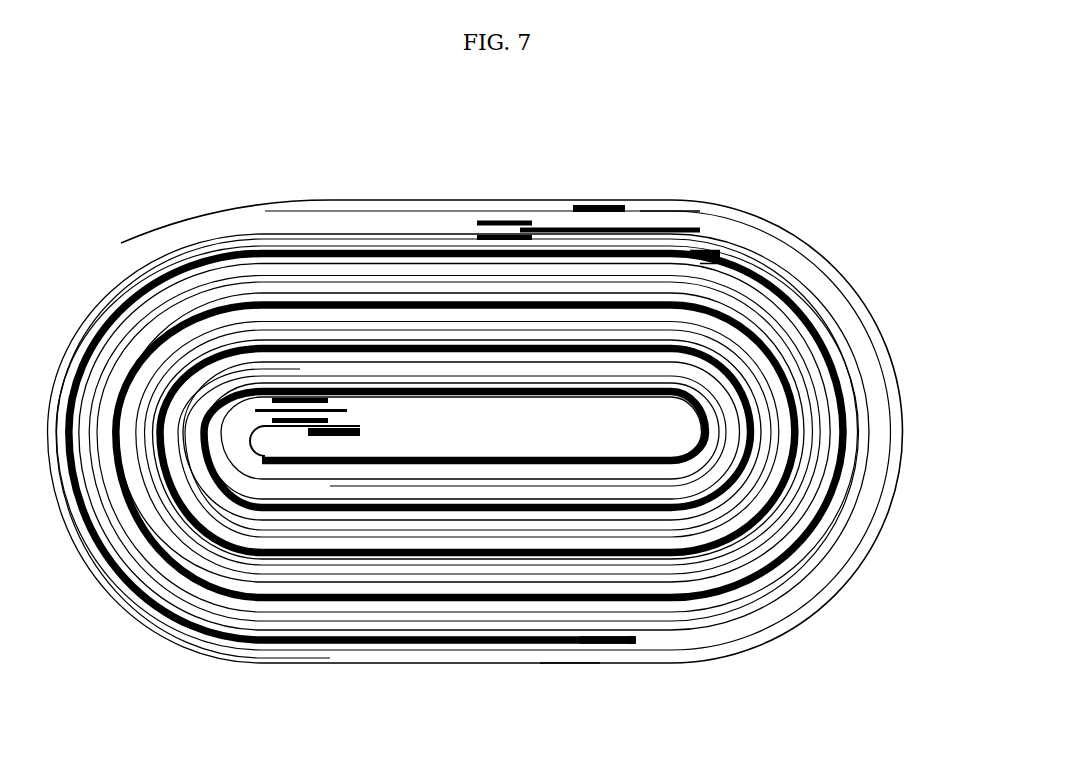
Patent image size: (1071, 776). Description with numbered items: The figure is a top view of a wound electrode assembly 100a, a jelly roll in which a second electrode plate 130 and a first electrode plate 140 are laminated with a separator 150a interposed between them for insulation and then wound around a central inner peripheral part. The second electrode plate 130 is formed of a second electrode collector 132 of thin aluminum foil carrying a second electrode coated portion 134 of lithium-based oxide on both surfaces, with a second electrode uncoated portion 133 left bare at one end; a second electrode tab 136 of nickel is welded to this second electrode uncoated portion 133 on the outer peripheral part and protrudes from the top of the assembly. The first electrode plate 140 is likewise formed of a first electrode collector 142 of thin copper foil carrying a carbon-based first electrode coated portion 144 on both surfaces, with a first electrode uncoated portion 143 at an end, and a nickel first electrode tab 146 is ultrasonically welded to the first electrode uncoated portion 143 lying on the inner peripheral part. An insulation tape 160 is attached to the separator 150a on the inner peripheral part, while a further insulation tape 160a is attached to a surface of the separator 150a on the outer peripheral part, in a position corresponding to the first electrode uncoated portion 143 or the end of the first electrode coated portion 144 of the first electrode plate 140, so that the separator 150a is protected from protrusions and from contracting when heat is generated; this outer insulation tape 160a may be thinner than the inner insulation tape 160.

The electrode assembly 100a is at (258, 159).
The second electrode plate 130 is at (469, 401).
The second electrode collector 132 is at (700, 252).
The second electrode uncoated portion 133 is at (665, 210).
The second electrode coated portion 134 is at (735, 220).
The second electrode tab 136 is at (603, 205).
The first electrode plate 140 is at (456, 493).
The first electrode collector 142 is at (618, 652).
The first electrode uncoated portion 143 is at (648, 655).
The first electrode coated portion 144 is at (570, 682).
The first electrode tab 146 is at (360, 429).
The separator 150a is at (886, 372).
The insulation tape 160 is at (348, 419).
The insulation tape 160a is at (522, 228).